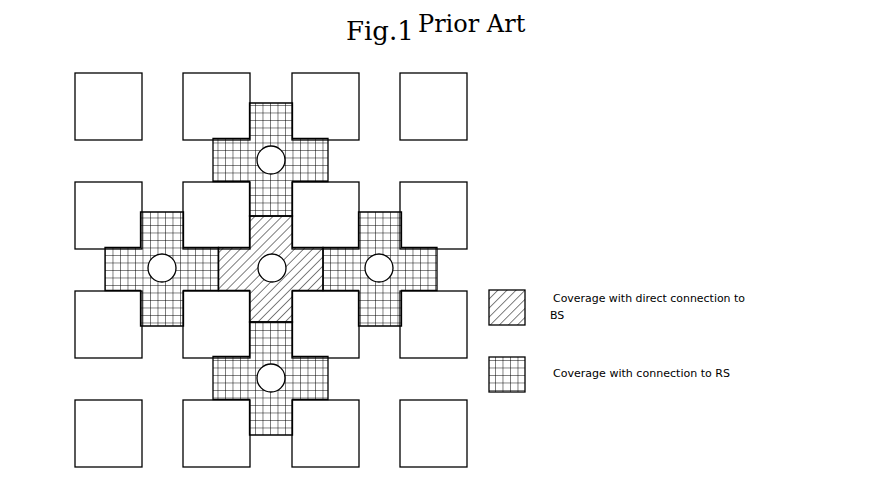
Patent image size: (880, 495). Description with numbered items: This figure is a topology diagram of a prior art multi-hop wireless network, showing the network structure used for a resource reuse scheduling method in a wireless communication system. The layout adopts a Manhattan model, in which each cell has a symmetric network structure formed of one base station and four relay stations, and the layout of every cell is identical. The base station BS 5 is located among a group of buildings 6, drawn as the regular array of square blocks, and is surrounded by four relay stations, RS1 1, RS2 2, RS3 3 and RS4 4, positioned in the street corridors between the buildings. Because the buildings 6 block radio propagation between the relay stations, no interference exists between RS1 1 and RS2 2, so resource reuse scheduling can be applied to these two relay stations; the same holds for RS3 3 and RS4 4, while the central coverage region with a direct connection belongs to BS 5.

The RS1 1 is at (284, 159).
The RS2 2 is at (390, 267).
The RS3 3 is at (262, 377).
The RS4 4 is at (152, 268).
The BS 5 is at (283, 266).
The buildings 6 is at (453, 110).